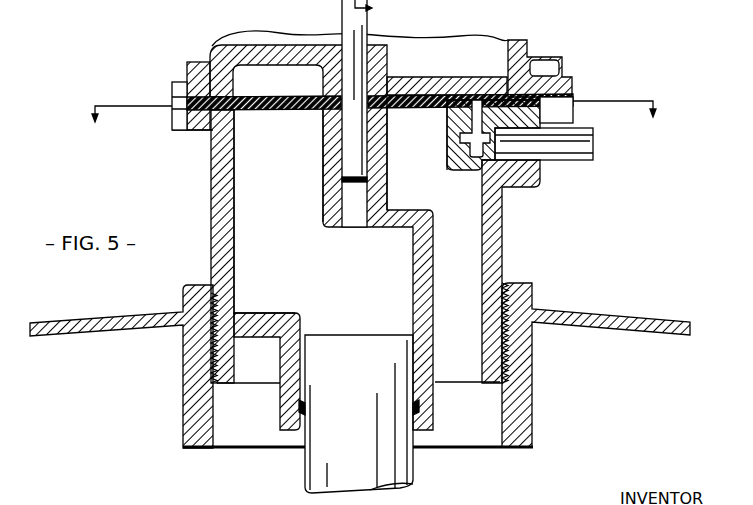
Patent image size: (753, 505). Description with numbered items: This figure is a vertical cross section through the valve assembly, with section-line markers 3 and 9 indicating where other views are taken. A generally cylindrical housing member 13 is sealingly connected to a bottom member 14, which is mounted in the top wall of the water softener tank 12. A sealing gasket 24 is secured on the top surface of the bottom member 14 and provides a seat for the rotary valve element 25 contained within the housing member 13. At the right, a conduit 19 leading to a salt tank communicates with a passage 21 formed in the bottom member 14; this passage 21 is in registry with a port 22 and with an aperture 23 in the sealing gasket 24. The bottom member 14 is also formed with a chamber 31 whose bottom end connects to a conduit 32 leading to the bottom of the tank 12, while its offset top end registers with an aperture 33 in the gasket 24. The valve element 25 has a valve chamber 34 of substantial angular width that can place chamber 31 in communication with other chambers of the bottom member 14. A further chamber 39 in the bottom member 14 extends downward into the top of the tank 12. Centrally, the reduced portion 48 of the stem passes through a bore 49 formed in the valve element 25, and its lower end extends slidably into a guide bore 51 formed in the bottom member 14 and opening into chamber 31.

The section line 3- 3 is at (372, 9).
The section line 9- 9 is at (374, 124).
The water softener tank 12 is at (577, 312).
The housing member 13 is at (203, 62).
The bottom member 14 is at (212, 183).
The conduit 19 is at (585, 148).
The passage 21 is at (481, 157).
The port 22 is at (450, 127).
The aperture 23 is at (470, 104).
The sealing gasket 24 is at (463, 99).
The rotary valve element 25 is at (278, 46).
The chamber 31 is at (278, 211).
The conduit 32 is at (306, 466).
The aperture 33 is at (313, 109).
The valve chamber 34 is at (172, 84).
The chamber 39 is at (417, 153).
The reduced portion 48 is at (350, 175).
The bore 49 is at (388, 68).
The guide bore 51 is at (357, 227).